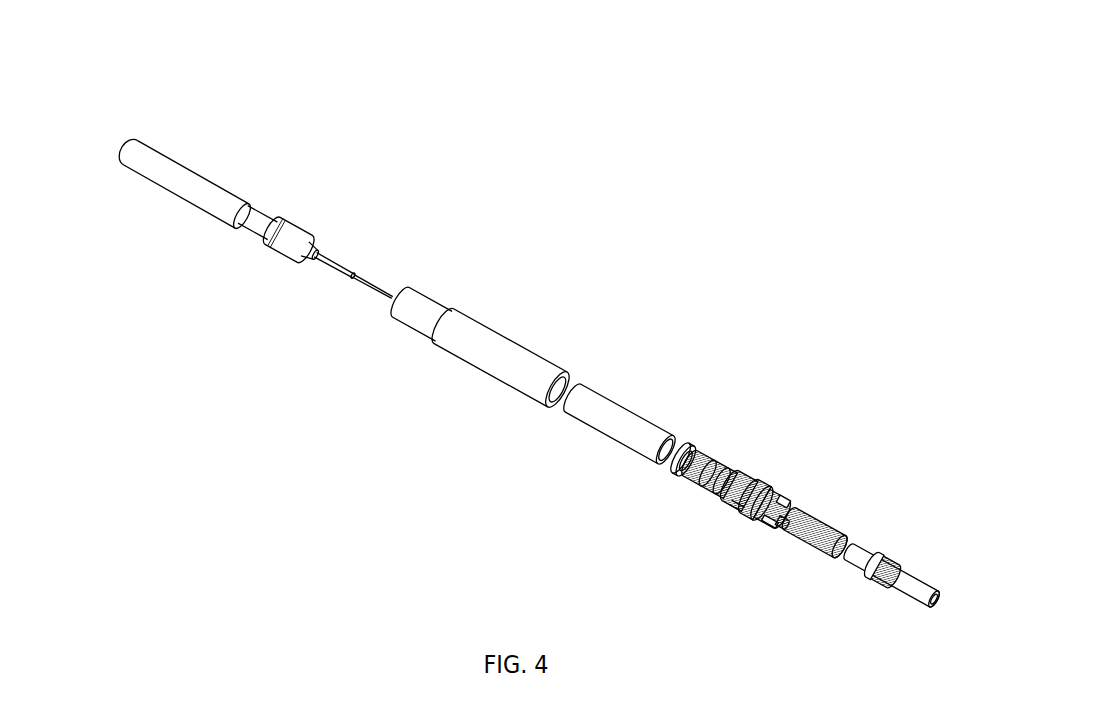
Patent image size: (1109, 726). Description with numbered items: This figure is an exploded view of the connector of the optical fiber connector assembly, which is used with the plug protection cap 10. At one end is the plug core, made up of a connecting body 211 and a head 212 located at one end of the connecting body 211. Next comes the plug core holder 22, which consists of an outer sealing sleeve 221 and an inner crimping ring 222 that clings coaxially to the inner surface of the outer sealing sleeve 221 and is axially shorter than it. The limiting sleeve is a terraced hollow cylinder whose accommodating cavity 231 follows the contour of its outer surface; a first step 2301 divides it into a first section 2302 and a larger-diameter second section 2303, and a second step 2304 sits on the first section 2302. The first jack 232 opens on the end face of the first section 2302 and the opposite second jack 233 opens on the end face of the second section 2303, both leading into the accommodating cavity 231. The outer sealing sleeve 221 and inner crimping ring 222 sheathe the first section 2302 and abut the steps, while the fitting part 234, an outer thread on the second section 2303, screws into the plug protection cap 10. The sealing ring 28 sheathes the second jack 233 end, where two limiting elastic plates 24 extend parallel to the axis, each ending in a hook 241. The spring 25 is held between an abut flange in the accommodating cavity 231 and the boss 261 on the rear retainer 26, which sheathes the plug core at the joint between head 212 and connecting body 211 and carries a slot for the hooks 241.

The plug protection cap 10 is at (615, 63).
The connecting body 211 is at (298, 230).
The head 212 is at (902, 567).
The plug core holder 22 is at (627, 293).
The outer sealing sleeve 221 is at (517, 360).
The inner crimping ring 222 is at (597, 403).
The sealing ring 28 is at (680, 437).
The first jack 232 is at (673, 475).
The first step 2301 is at (730, 463).
The first section 2302 is at (712, 450).
The second section 2303 is at (758, 473).
The second step 2304 is at (711, 490).
The limiting elastic plate 24 is at (767, 487).
The second jack 233 is at (780, 497).
The fitting part 234 is at (737, 503).
The accommodating cavity 231 is at (760, 510).
The hook 241 is at (767, 520).
The spring 25 is at (813, 513).
The rear retainer 26 is at (863, 540).
The boss 261 is at (870, 560).